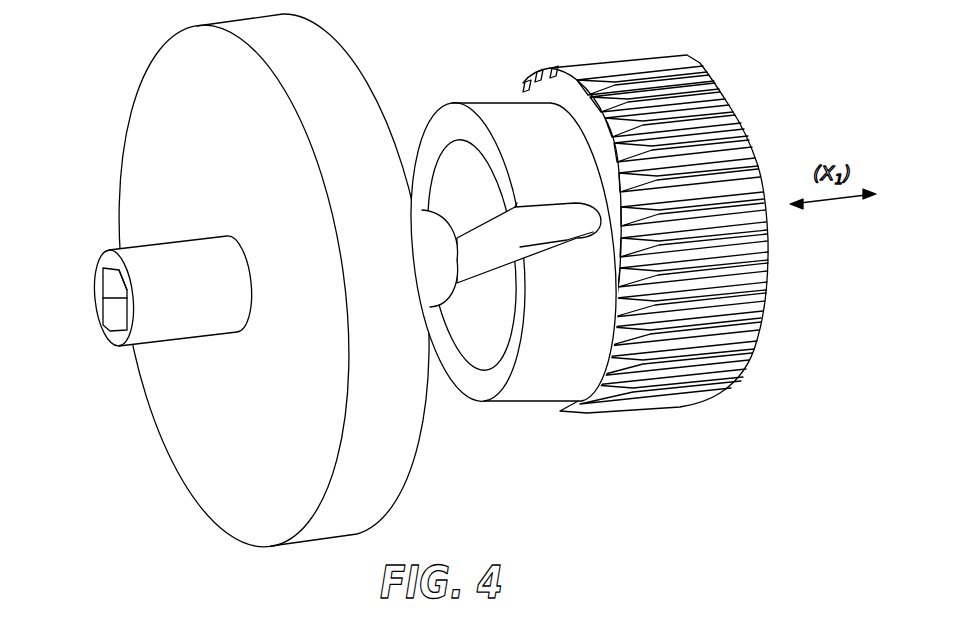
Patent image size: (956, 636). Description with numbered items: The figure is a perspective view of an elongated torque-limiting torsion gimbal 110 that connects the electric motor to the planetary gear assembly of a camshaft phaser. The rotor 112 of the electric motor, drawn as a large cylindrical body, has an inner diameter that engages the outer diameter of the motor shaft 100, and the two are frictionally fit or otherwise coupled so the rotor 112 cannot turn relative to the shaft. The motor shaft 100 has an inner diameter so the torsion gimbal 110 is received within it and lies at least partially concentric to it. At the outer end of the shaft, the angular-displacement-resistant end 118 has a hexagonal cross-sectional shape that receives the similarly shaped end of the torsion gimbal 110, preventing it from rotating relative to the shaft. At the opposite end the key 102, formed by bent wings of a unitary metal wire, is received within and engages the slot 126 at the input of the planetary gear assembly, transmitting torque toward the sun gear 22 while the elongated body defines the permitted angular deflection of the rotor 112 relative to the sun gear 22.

The sun gear 22 is at (488, 90).
The motor shaft 100 is at (422, 210).
The key 102 is at (530, 216).
The torque-limiting torsion gimbal 110 is at (478, 306).
The rotor 112 is at (230, 156).
The angular-displacement-resistant end 118 is at (110, 311).
The slot 126 is at (570, 246).